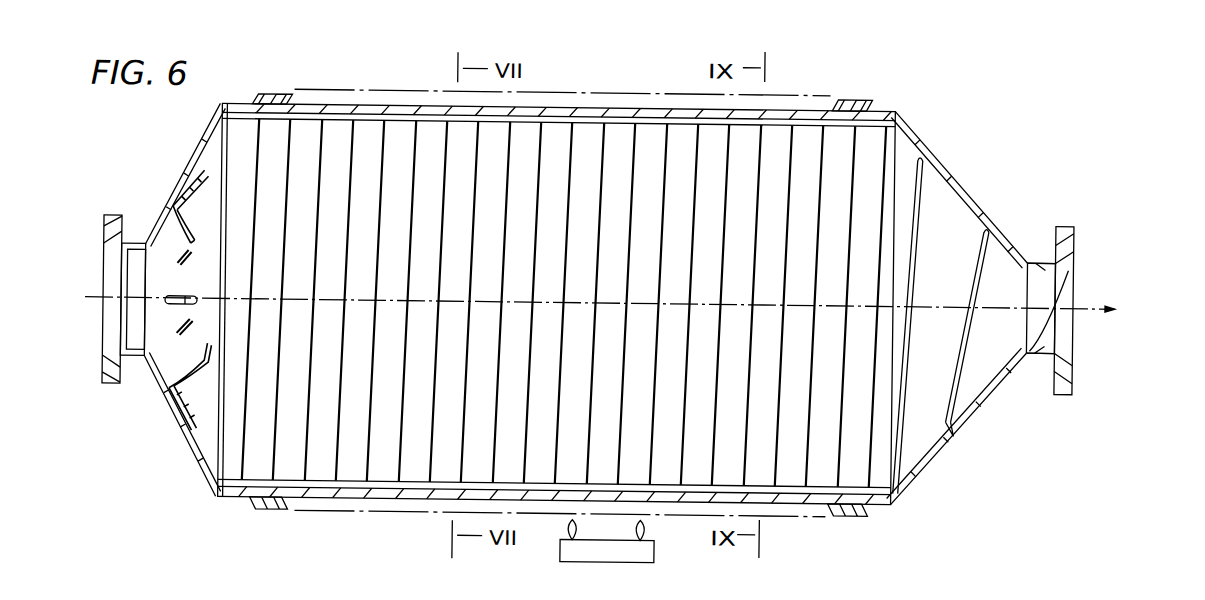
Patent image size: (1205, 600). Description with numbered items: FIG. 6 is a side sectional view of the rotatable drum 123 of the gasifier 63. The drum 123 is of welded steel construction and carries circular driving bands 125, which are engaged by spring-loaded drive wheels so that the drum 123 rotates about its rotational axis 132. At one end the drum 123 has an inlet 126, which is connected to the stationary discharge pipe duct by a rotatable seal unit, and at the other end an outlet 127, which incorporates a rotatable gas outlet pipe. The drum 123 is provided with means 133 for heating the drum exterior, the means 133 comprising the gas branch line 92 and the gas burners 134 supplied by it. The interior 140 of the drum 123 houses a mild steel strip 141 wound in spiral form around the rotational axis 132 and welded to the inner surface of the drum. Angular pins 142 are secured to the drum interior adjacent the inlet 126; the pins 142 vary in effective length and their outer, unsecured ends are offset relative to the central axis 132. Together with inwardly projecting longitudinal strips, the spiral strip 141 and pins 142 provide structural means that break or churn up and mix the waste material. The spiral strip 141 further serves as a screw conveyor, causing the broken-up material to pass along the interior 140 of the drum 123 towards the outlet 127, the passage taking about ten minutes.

The gasifier 63 is at (612, 283).
The gas branch line 92 is at (633, 552).
The drum 123 is at (905, 101).
The circular driving bands 125 is at (850, 92).
The inlet 126 is at (110, 274).
The outlet 127 is at (1073, 289).
The rotational axis 132 is at (963, 296).
The means for heating the drum exterior 133 is at (627, 559).
The gas burners 134 is at (573, 536).
The interior of the drum 140 is at (960, 359).
The mild steel strip 141 is at (875, 242).
The angular pins 142 is at (208, 348).